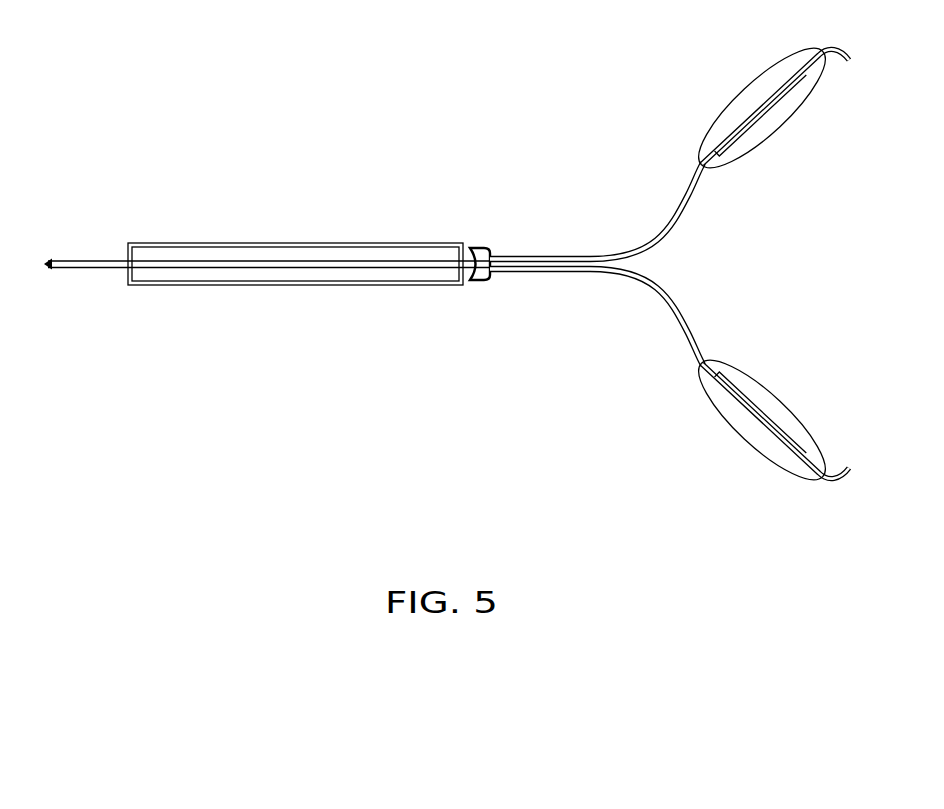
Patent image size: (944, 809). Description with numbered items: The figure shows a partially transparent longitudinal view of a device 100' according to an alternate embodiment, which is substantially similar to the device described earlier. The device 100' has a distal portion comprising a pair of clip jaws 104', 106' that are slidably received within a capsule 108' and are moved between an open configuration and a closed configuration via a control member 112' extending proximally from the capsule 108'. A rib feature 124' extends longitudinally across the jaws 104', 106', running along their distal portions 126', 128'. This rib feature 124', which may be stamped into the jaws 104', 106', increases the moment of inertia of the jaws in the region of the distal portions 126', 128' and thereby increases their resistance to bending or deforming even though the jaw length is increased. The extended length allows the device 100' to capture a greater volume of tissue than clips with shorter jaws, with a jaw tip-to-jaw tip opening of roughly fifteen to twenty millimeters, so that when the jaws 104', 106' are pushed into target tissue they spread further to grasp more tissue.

The device 100' is at (446, 260).
The clip jaw 104' is at (596, 211).
The clip jaw 106' is at (596, 317).
The capsule 108' is at (295, 220).
The control member 112' is at (267, 213).
The rib feature 124' is at (772, 135).
The distal portion of the jaw 126' is at (742, 107).
The distal portion of the jaw 128' is at (736, 419).